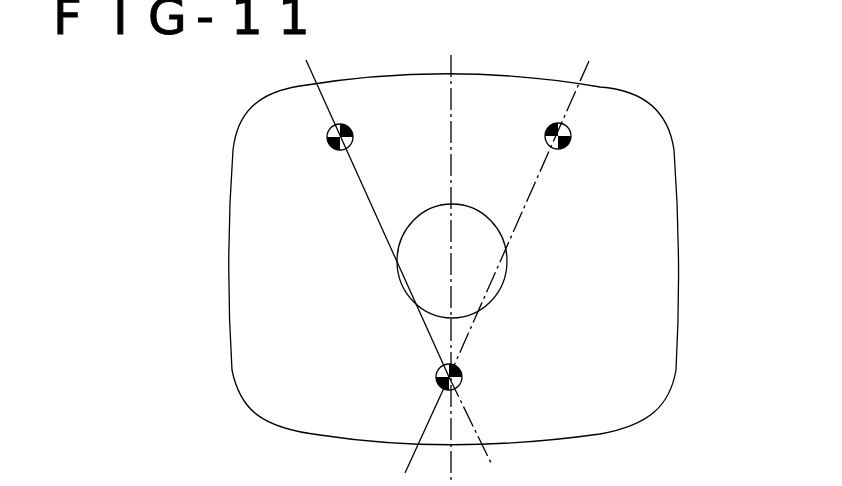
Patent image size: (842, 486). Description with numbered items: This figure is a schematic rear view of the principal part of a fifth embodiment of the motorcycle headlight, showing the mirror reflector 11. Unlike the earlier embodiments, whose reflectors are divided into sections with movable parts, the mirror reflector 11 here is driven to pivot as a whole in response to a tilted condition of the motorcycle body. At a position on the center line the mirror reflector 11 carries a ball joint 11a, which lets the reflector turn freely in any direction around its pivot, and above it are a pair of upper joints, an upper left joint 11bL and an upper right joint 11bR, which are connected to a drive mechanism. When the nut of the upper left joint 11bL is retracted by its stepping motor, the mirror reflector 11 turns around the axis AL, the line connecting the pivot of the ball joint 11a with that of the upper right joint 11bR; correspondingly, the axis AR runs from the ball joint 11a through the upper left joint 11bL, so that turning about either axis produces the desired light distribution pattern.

The mirror reflector 11 is at (640, 384).
The ball joint 11a is at (436, 378).
The upper left joint 11bL is at (351, 141).
The upper right joint 11bR is at (563, 148).
The turning axis AR is at (383, 230).
The turning axis AL is at (525, 205).